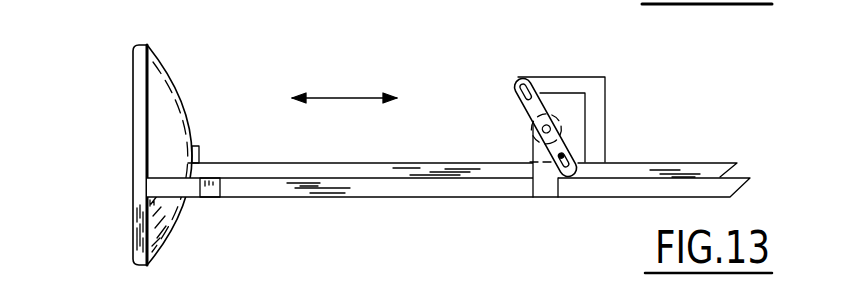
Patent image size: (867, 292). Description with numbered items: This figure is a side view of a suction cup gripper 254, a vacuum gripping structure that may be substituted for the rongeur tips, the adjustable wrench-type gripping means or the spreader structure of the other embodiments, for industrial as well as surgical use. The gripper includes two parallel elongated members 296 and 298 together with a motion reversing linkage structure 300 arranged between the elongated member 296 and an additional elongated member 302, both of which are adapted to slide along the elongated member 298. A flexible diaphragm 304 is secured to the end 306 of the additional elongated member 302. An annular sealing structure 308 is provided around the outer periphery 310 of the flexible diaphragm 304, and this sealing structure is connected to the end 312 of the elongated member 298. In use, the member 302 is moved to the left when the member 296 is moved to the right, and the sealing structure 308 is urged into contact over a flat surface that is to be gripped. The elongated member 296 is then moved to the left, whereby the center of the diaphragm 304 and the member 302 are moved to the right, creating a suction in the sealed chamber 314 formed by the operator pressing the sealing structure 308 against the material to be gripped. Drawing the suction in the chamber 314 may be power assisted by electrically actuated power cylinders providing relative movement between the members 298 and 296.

The suction cup gripper 254 is at (391, 199).
The elongated member 296 is at (645, 163).
The elongated member 298 is at (623, 197).
The motion reversing linkage structure 300 is at (517, 112).
The additional elongated member 302 is at (330, 163).
The flexible diaphragm 304 is at (172, 86).
The end of additional elongated member 306 is at (195, 148).
The annular sealing structure 308 is at (133, 235).
The outer periphery 310 is at (150, 47).
The end of elongated member 312 is at (147, 190).
The sealed chamber 314 is at (155, 107).